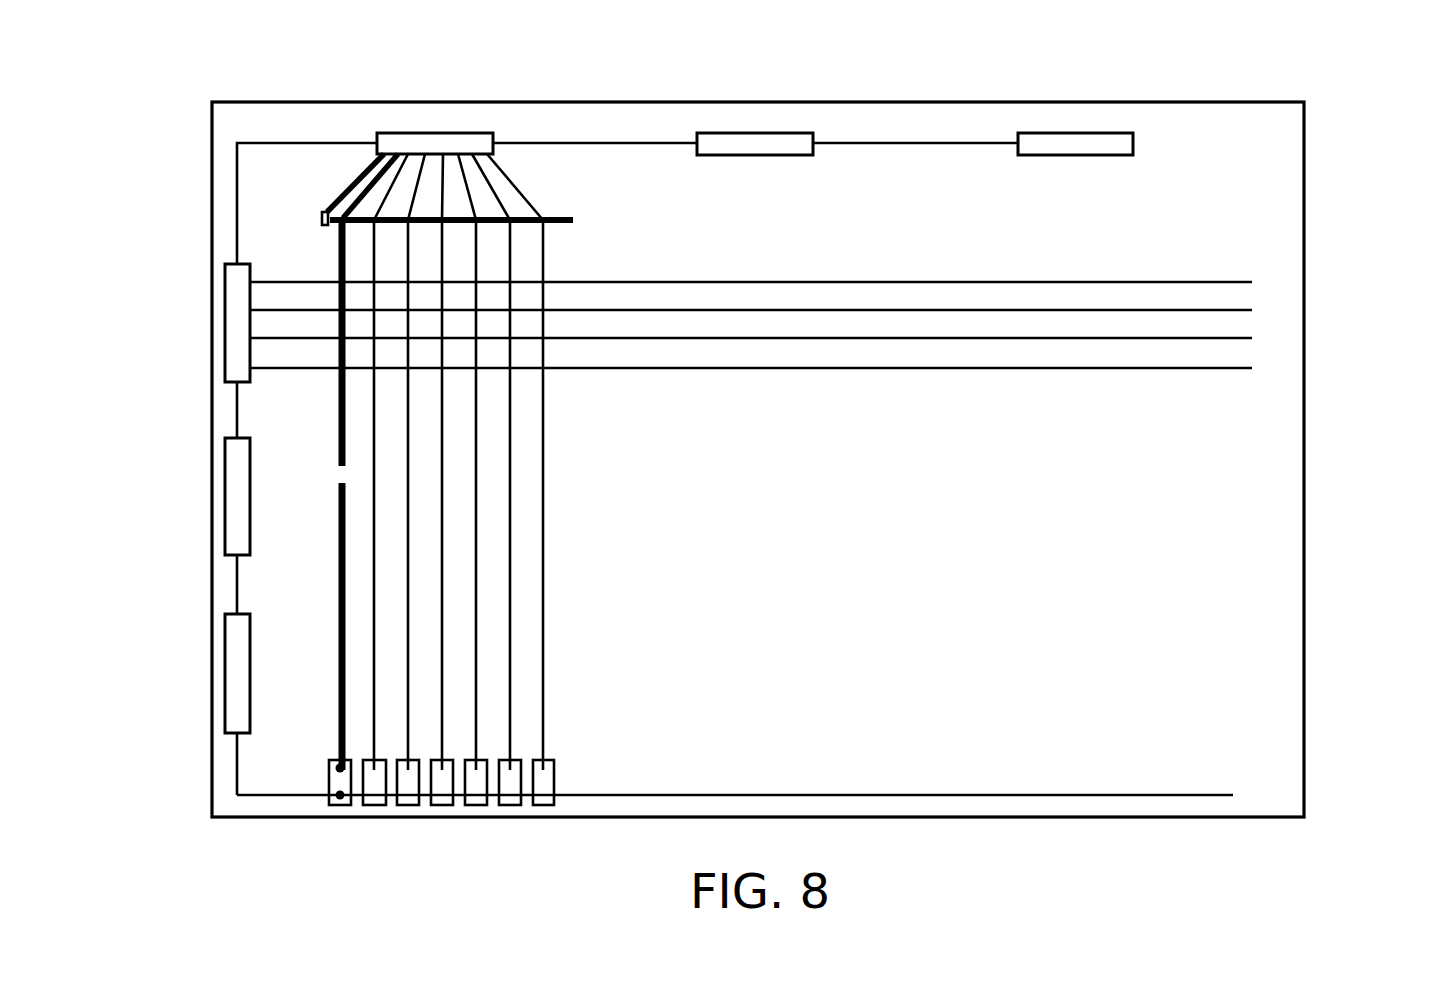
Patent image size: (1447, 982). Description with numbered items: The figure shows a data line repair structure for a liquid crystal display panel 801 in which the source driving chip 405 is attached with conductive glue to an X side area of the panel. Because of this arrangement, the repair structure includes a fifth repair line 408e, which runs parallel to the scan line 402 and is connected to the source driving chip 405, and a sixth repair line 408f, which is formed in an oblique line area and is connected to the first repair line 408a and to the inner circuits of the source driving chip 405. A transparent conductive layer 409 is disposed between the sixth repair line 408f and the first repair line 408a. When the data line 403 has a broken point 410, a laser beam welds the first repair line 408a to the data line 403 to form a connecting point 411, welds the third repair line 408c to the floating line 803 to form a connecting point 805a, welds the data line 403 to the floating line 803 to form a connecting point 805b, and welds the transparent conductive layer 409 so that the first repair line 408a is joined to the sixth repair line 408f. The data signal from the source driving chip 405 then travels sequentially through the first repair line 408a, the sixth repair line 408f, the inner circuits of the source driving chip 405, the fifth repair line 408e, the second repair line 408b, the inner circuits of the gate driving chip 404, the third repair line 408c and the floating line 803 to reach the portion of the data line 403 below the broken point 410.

The liquid crystal display panel 801 is at (1328, 248).
The scan line 402 is at (1192, 281).
The data line 403 is at (338, 272).
The gate driving chip 404 is at (225, 323).
The source driving chip 405 is at (435, 133).
The first repair line 408a is at (560, 215).
The second repair line 408b is at (237, 178).
The third repair line 408c is at (1222, 795).
The fifth repair line 408e is at (867, 143).
The sixth repair line 408f is at (357, 168).
The transparent conductive layer 409 is at (324, 212).
The broken point 410 is at (330, 477).
The connecting point 411 is at (335, 245).
The floating line 803 is at (345, 805).
The connecting point 805a is at (338, 797).
The connecting point 805b is at (332, 766).